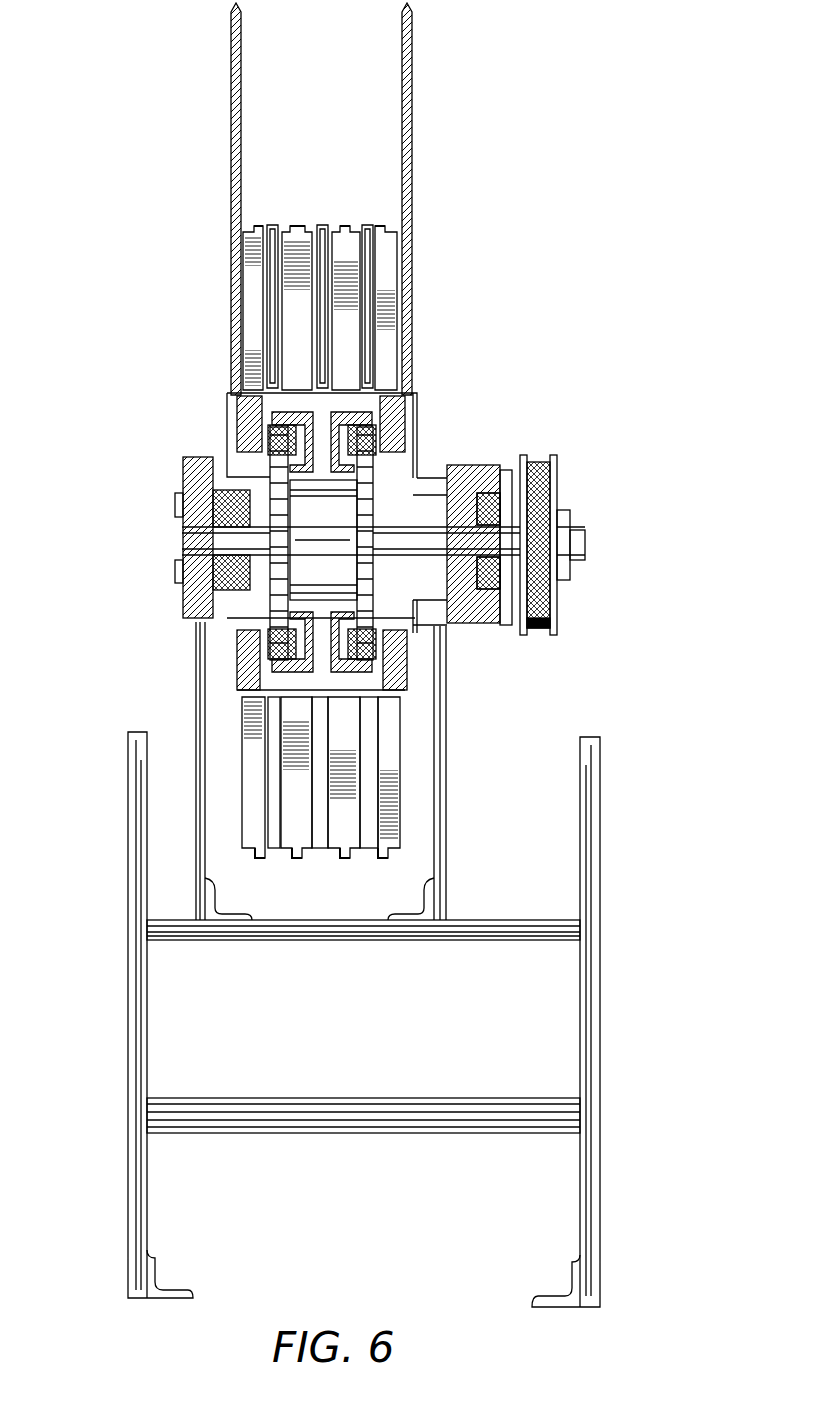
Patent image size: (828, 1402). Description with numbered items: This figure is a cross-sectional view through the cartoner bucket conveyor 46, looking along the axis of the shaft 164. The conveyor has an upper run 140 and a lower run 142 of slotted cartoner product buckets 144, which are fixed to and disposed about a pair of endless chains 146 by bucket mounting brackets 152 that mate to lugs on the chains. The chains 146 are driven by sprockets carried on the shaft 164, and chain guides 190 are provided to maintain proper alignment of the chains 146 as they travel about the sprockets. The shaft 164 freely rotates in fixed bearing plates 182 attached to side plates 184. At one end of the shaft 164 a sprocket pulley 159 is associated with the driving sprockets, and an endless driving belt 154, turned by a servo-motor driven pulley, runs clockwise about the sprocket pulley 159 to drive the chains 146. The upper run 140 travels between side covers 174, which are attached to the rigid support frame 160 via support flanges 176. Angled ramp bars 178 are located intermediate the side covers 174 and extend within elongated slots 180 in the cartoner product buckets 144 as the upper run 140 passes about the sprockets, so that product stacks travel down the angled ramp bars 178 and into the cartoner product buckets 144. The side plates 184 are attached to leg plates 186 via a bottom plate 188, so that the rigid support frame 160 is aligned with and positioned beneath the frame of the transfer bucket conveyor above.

The cartoner bucket conveyor 46 is at (612, 228).
The upper run 140 is at (231, 235).
The lower run 142 is at (414, 820).
The cartoner product buckets 144 is at (377, 298).
The endless chains 146 is at (272, 420).
The bucket mounting brackets 152 is at (398, 400).
The driving belt 154 is at (540, 458).
The sprocket pulley 159 is at (545, 622).
The rigid support frame 160 is at (600, 742).
The shaft 164 is at (585, 540).
The side covers 174 is at (231, 100).
The support flanges 176 is at (240, 436).
The angled ramp bars 178 is at (375, 222).
The elongated slots 180 is at (277, 852).
The bearing plates 182 is at (470, 466).
The side plates 184 is at (196, 666).
The leg plates 186 is at (130, 1018).
The bottom plate 188 is at (335, 940).
The chain guides 190 is at (280, 392).